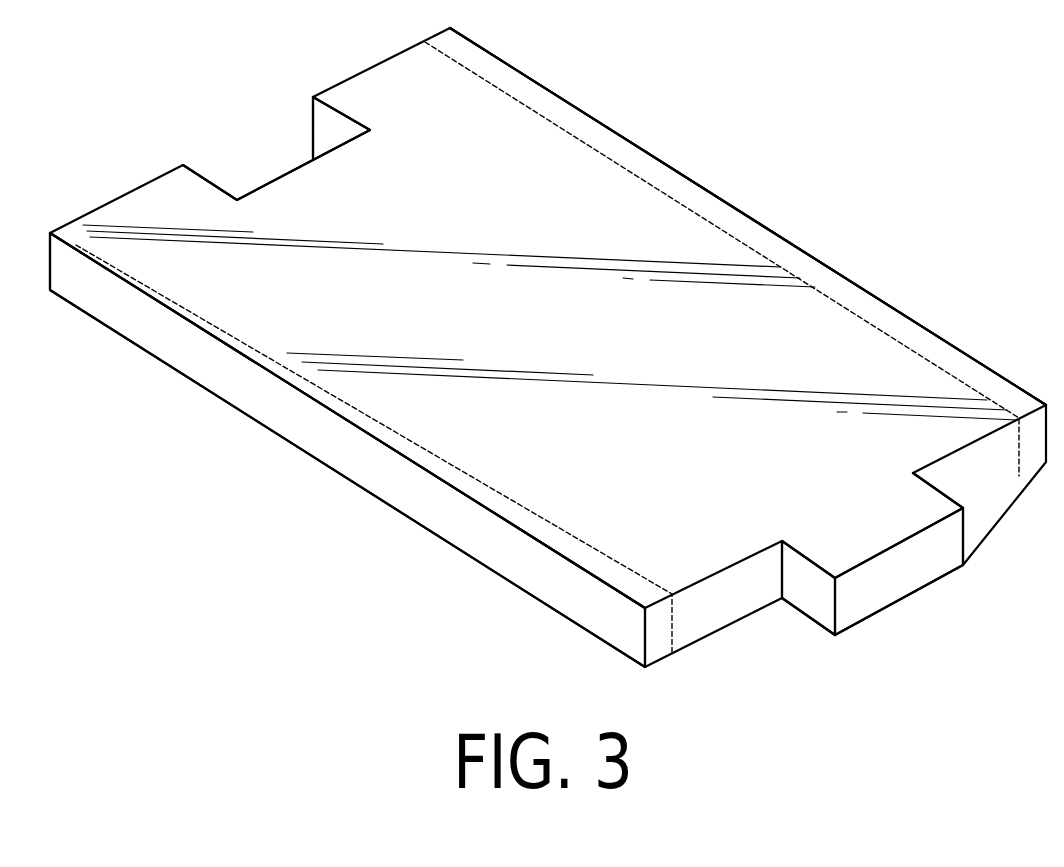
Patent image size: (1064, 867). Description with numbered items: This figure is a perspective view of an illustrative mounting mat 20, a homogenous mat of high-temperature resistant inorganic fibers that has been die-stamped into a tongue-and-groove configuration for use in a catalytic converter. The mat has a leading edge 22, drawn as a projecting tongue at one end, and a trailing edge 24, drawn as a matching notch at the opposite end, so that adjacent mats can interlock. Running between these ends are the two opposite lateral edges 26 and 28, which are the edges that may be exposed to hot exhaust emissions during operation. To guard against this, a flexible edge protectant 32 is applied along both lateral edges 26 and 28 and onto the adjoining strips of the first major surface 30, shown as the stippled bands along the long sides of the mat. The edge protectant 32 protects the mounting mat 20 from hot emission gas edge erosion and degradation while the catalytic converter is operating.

The mounting mat 20 is at (707, 88).
The leading edge 22 is at (923, 563).
The trailing edge 24 is at (313, 118).
The lateral edge 26 is at (870, 293).
The lateral edge 28 is at (390, 488).
The first major surface 30 is at (530, 88).
The flexible edge protectant 32 is at (710, 202).